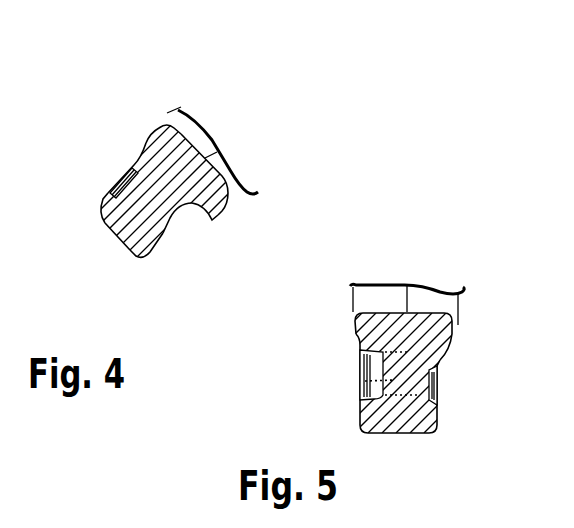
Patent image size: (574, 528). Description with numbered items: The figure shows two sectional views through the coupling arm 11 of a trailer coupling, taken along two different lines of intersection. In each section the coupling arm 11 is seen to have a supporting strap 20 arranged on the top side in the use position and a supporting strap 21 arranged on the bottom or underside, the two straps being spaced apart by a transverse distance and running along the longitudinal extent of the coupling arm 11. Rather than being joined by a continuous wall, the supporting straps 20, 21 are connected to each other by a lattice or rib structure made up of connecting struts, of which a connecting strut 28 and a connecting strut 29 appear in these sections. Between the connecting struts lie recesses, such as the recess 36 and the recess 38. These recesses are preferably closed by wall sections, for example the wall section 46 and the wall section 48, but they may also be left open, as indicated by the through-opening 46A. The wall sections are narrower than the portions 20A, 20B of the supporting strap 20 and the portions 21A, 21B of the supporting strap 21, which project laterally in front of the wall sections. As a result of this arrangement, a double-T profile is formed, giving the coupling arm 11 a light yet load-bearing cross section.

In FIG. 4, the coupling arm 11 is at (241, 153).
In FIG. 5, the coupling arm 11 is at (399, 269).
In FIG. 4, the supporting strap 20 is at (160, 142).
In FIG. 5, the supporting strap 20 is at (440, 340).
In FIG. 4, the portion of the supporting strap 20A is at (172, 135).
In FIG. 4, the portion of the supporting strap 20B is at (222, 203).
In FIG. 4, the supporting strap 21 is at (138, 242).
In FIG. 5, the supporting strap 21 is at (412, 425).
In FIG. 4, the portion of the supporting strap 21A is at (102, 205).
In FIG. 4, the portion of the supporting strap 21B is at (153, 245).
In FIG. 5, the connecting strut 28 is at (378, 362).
In FIG. 4, the connecting strut 29 is at (197, 220).
In FIG. 5, the recess 36 is at (430, 373).
In FIG. 4, the recess 38 is at (185, 225).
In FIG. 5, the wall section 46 is at (405, 385).
In FIG. 5, the through-opening 46A is at (365, 381).
In FIG. 4, the wall section 48 is at (148, 190).